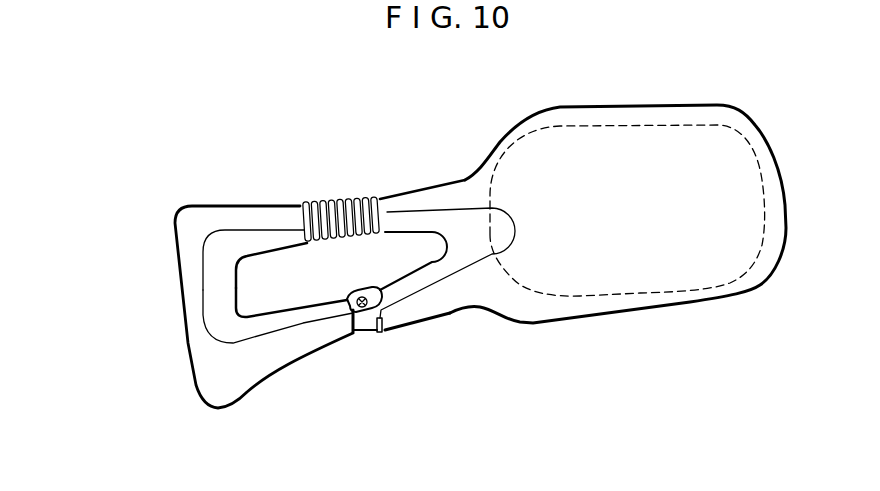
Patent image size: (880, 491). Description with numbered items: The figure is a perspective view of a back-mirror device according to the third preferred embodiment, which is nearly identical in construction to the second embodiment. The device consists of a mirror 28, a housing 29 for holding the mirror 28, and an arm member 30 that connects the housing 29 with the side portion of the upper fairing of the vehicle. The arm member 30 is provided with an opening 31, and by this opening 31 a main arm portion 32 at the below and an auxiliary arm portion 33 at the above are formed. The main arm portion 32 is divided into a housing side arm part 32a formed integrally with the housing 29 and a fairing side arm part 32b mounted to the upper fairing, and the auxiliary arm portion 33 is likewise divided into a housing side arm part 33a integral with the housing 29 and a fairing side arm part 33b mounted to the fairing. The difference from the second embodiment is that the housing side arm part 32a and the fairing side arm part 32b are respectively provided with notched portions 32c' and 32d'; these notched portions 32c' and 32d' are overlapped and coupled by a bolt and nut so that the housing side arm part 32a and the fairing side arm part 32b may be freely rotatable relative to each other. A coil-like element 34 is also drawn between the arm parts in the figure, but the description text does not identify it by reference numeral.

The mirror 28 is at (741, 264).
The housing 29 is at (632, 307).
The arm member 30 is at (99, 203).
The opening 31 is at (361, 268).
The main arm portion 32 is at (140, 280).
The housing side arm part 32a is at (350, 293).
The fairing side arm part 32b is at (307, 315).
The notched portion 32c' is at (405, 353).
The notched portion 32d' is at (369, 356).
The auxiliary arm portion 33 is at (140, 167).
The housing side arm part 33a is at (413, 200).
The fairing side arm part 33b is at (273, 218).
The coil spring 34 is at (345, 238).